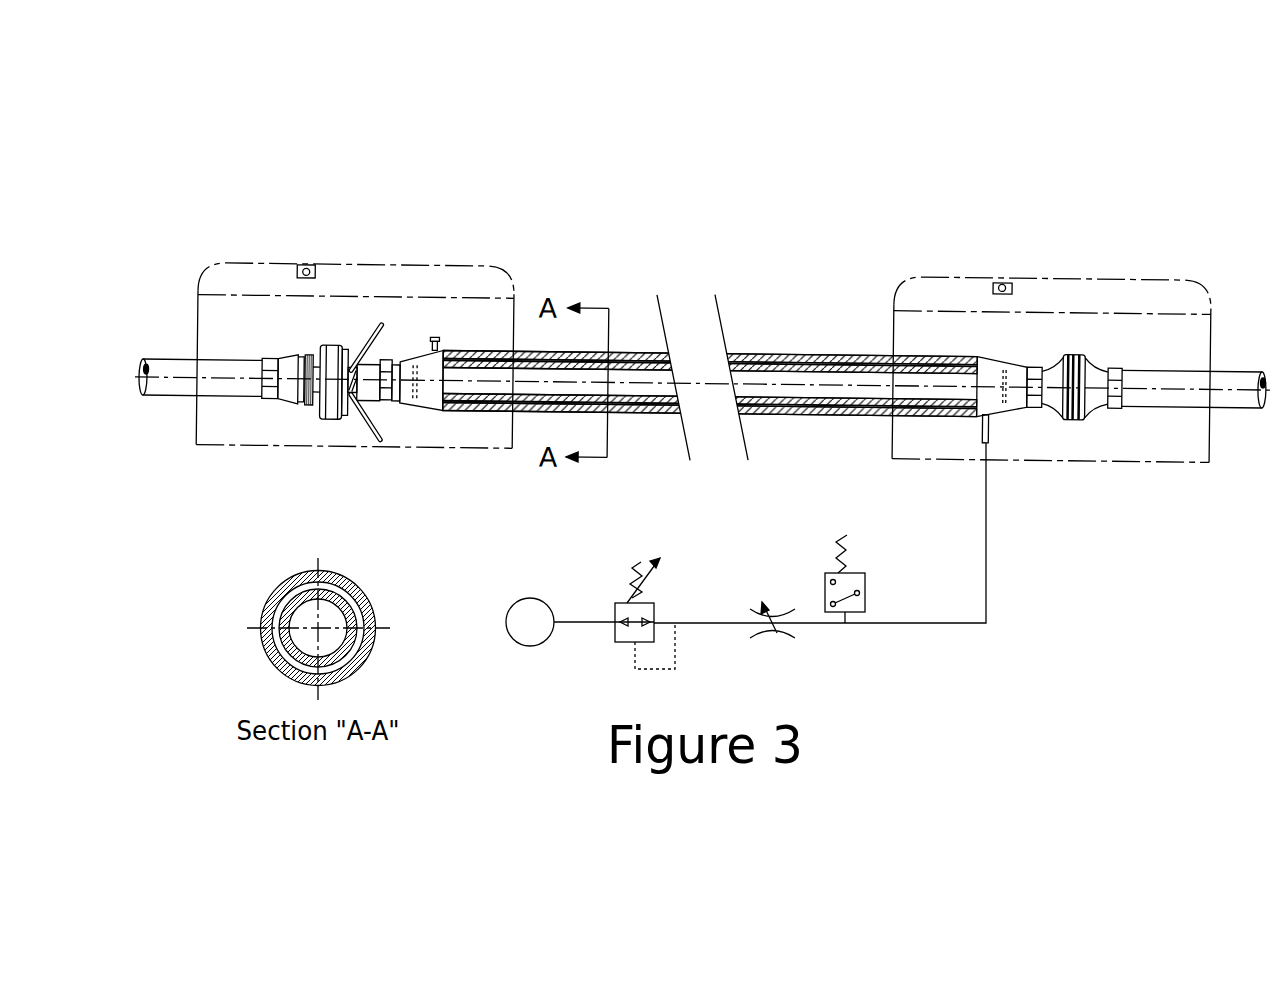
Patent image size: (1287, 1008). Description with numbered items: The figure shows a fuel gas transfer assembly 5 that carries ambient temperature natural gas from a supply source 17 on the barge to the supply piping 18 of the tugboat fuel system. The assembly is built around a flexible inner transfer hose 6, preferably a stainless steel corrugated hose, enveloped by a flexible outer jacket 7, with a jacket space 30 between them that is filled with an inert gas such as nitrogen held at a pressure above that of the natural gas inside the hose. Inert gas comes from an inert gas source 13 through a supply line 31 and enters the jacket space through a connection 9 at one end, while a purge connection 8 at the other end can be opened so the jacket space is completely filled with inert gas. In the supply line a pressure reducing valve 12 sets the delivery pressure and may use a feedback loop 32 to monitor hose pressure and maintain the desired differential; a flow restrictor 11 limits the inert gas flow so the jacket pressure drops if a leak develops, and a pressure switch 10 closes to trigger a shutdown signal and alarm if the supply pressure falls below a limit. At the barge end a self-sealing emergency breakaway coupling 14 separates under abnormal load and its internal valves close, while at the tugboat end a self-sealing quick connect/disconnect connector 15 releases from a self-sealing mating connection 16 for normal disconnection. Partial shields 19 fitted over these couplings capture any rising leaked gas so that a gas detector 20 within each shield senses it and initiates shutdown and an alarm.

The fuel gas transfer assembly 5 is at (800, 347).
The inner transfer hose 6 is at (768, 355).
The outer jacket 7 is at (752, 351).
The purge connection 8 is at (437, 336).
The connection 9 is at (983, 418).
The pressure switch 10 is at (827, 573).
The flow restrictor 11 is at (770, 612).
The pressure reducing valve 12 is at (618, 598).
The inert gas source 13 is at (527, 612).
The self-sealing emergency breakaway coupling 14 is at (1087, 409).
The self-sealing quick connect/disconnect connector 15 is at (345, 418).
The self-sealing mating connection 16 is at (288, 403).
The supply source 17 is at (1233, 392).
The supply piping 18 is at (167, 390).
The partial shield 19 is at (270, 261).
The gas detector 20 is at (305, 270).
The jacket space 30 is at (850, 355).
The supply line 31 is at (935, 630).
The feedback loop 32 is at (677, 653).